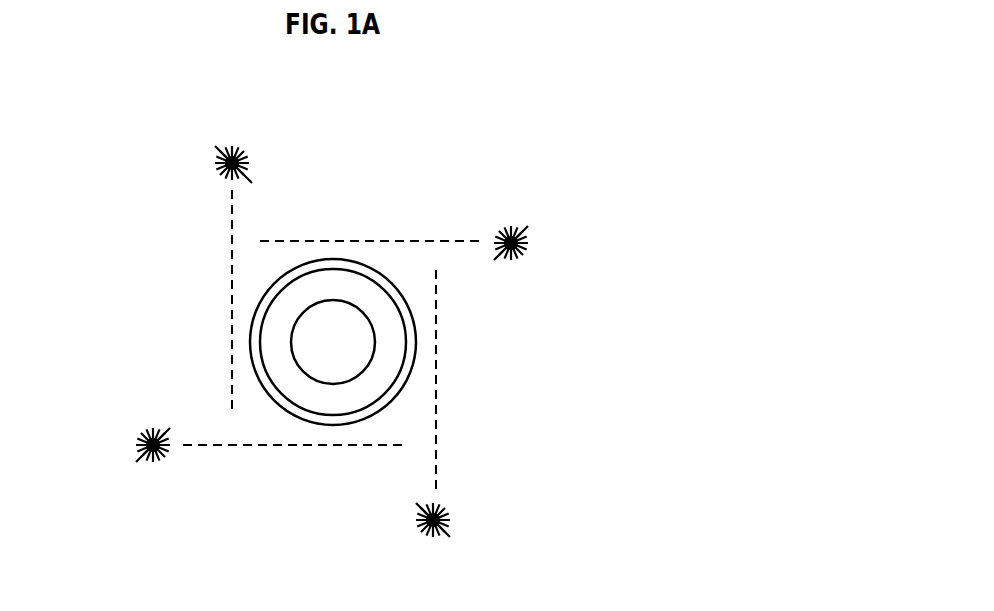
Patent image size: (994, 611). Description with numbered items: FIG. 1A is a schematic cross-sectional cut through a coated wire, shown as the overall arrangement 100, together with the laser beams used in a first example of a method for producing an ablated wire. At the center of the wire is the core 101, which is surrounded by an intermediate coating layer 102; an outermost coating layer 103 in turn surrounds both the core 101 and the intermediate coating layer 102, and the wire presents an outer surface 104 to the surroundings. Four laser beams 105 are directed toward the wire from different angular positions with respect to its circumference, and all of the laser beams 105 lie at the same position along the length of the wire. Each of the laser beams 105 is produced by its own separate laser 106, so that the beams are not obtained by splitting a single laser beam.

The optical system 100 is at (818, 64).
The core 101 is at (357, 340).
The intermediate coating layer 102 is at (342, 403).
The outermost coating layer 103 is at (258, 343).
The outer surface 104 is at (258, 297).
The laser beams 105 is at (340, 241).
The laser 106 is at (240, 150).